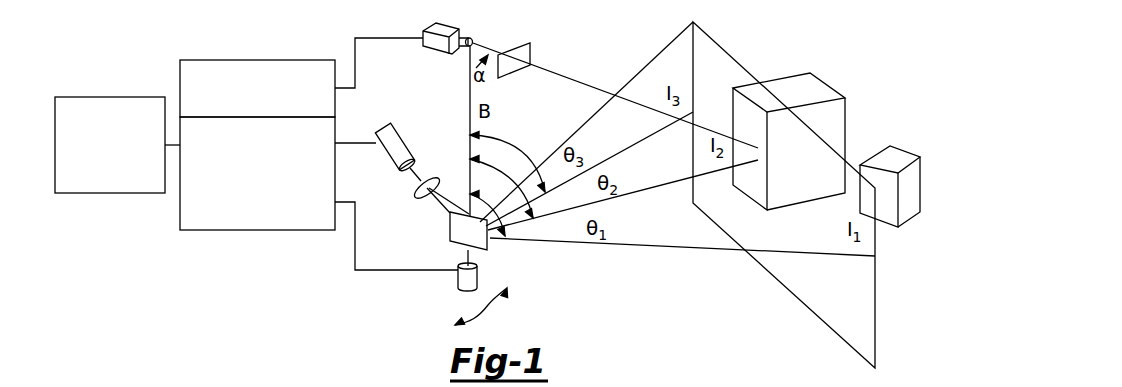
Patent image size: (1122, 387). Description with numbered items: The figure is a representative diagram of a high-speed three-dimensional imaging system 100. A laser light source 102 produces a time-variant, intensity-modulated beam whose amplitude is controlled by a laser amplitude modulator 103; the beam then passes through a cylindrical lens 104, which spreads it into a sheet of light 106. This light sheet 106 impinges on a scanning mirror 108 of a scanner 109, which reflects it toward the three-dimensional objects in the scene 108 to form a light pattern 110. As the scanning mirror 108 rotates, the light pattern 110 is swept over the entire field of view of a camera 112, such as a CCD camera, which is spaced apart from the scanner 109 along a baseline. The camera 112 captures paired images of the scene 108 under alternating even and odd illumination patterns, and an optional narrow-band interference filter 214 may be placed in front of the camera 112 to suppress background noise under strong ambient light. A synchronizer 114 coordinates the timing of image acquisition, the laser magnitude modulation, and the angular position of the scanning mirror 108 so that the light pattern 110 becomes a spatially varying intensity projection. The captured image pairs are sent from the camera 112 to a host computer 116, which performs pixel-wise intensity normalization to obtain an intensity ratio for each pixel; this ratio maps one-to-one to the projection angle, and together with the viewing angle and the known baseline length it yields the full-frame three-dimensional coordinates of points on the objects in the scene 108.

The 3D imaging system 100 is at (313, 300).
The laser light source 102 is at (402, 127).
The laser amplitude modulator 103 is at (215, 230).
The cylindrical lens 104 is at (413, 198).
The sheet of light 106 is at (449, 231).
The scanning mirror / scene 108 is at (494, 250).
The scanner 109 is at (457, 283).
The light pattern 110 is at (862, 346).
The camera 112 is at (454, 26).
The synchronizer 114 is at (205, 60).
The host computer 116 is at (97, 193).
The narrow-band interference filter 214 is at (532, 51).